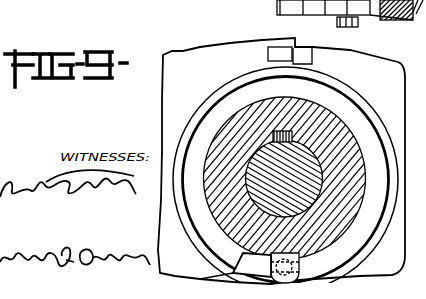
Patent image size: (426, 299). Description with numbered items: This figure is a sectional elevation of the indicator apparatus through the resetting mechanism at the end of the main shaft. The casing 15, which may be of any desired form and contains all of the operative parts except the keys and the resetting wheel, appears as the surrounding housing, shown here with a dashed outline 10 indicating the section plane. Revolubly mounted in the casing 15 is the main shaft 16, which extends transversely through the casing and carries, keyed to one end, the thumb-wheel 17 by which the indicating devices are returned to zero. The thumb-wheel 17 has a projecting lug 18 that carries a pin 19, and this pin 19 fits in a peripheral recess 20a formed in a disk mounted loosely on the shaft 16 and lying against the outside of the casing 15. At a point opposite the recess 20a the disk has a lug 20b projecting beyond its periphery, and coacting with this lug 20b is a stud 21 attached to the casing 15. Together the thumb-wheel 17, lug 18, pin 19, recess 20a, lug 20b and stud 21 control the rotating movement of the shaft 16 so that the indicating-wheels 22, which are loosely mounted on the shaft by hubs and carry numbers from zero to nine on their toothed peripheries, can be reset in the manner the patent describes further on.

The housing / casing 10 is at (280, 76).
The casing 15 is at (285, 179).
The main shaft 16 is at (312, 177).
The thumb-wheel 17 is at (325, 230).
The projecting lug 18 is at (299, 262).
The pin 19 is at (252, 266).
The peripheral recess 20a is at (230, 263).
The lug 20b is at (312, 57).
The stud 21 is at (268, 53).
The indicating-wheels 22 is at (360, 112).